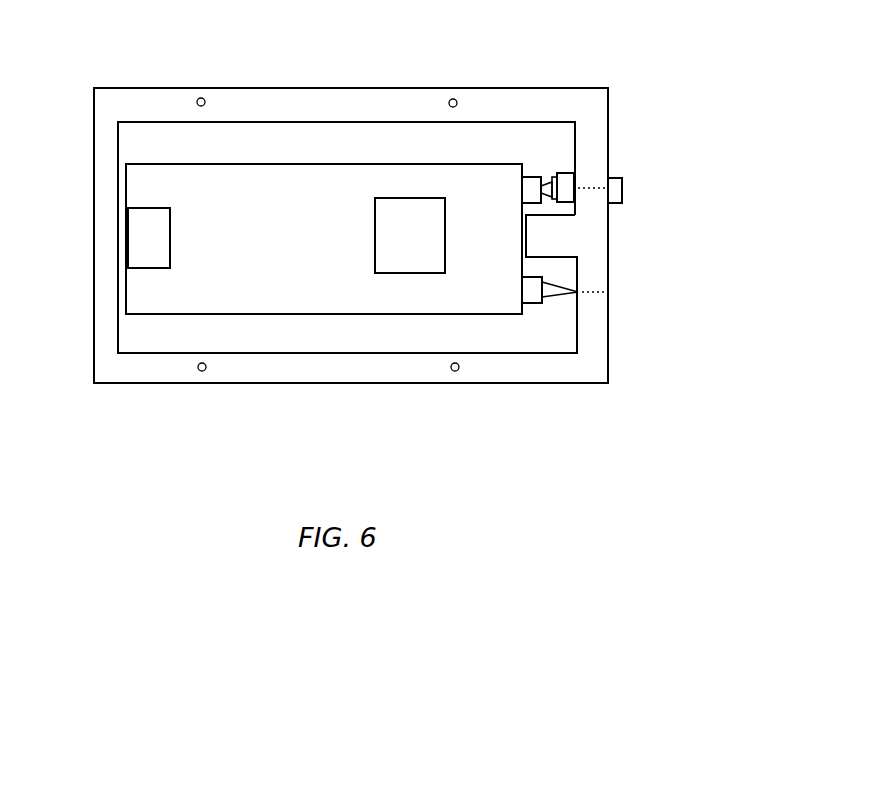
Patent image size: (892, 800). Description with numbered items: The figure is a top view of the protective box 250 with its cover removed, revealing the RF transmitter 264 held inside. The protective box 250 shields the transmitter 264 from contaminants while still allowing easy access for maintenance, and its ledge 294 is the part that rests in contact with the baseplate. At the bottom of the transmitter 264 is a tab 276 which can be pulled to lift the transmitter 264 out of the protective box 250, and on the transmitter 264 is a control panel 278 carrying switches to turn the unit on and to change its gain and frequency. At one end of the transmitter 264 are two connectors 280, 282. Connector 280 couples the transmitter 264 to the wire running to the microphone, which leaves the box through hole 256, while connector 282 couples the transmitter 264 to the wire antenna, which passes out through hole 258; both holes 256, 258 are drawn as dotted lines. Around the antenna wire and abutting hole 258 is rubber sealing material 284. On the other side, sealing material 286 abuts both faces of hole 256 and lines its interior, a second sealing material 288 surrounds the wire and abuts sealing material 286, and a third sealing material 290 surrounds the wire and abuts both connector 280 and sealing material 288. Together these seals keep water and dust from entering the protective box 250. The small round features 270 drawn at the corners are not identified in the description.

The protective box 250 is at (335, 198).
The hole 256 is at (635, 150).
The hole 258 is at (631, 330).
The transmitter 264 is at (320, 316).
The mounting holes 270 is at (317, 263).
The tab 276 is at (186, 234).
The control panel 278 is at (361, 228).
The connector 280 is at (464, 167).
The connector 282 is at (464, 313).
The rubber sealing material 284 is at (556, 367).
The sealing material 286 is at (634, 218).
The second sealing material 288 is at (615, 237).
The third sealing material 290 is at (350, 264).
The ledge 294 is at (671, 205).